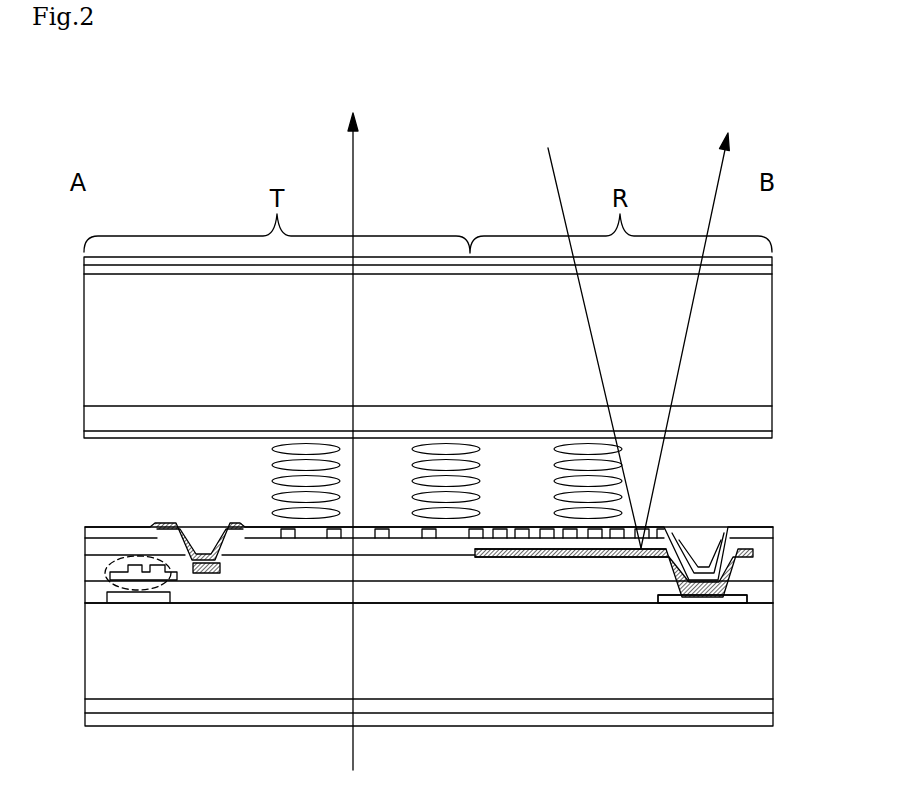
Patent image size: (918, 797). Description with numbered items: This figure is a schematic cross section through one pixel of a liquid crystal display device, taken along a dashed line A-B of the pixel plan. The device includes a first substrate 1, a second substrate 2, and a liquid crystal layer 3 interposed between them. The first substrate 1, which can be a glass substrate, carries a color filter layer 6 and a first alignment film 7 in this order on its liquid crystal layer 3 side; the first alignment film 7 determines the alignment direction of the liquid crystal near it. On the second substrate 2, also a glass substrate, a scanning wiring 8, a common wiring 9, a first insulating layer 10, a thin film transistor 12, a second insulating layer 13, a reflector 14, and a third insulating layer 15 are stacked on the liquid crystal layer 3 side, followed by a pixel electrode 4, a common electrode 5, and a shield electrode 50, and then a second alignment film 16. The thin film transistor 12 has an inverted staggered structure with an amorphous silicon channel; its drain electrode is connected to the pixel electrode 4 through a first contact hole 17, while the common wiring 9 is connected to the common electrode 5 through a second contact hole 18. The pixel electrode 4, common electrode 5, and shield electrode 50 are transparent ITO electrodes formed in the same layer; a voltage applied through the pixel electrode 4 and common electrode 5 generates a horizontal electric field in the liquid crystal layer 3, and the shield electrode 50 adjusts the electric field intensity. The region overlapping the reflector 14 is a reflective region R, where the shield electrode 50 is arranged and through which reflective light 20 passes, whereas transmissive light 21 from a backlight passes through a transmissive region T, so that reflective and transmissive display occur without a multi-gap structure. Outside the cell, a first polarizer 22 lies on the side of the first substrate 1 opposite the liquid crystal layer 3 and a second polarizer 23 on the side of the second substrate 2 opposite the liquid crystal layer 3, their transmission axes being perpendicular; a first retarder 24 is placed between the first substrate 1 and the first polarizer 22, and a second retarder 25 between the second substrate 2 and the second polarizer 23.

The first substrate 1 is at (772, 340).
The second substrate 2 is at (773, 660).
The liquid crystal layer 3 is at (78, 438).
The pixel electrode 4 is at (208, 573).
The common electrode 5 is at (773, 543).
The color filter layer 6 is at (772, 410).
The first alignment film 7 is at (772, 434).
The scanning wiring 8 is at (120, 602).
The common wiring 9 is at (700, 605).
The first insulating layer 10 is at (773, 601).
The thin film transistor 12 is at (158, 590).
The second insulating layer 13 is at (773, 578).
The reflector 14 is at (755, 556).
The third insulating layer 15 is at (572, 549).
The second alignment film 16 is at (773, 530).
The first contact hole 17 is at (224, 518).
The second contact hole 18 is at (727, 518).
The reflective light 20 is at (715, 230).
The transmissive light 21 is at (355, 190).
The first polarizer 22 is at (772, 262).
The second polarizer 23 is at (773, 722).
The first retarder 24 is at (772, 272).
The second retarder 25 is at (773, 708).
The shield electrode 50 is at (503, 535).